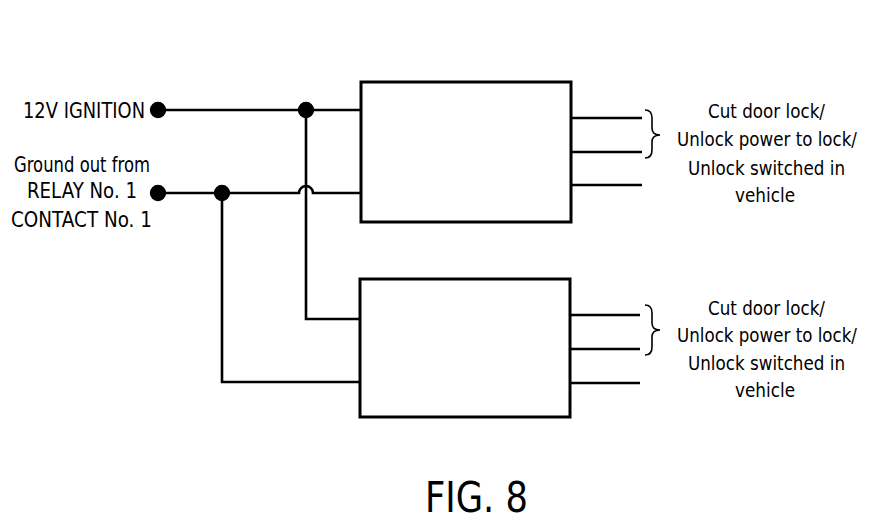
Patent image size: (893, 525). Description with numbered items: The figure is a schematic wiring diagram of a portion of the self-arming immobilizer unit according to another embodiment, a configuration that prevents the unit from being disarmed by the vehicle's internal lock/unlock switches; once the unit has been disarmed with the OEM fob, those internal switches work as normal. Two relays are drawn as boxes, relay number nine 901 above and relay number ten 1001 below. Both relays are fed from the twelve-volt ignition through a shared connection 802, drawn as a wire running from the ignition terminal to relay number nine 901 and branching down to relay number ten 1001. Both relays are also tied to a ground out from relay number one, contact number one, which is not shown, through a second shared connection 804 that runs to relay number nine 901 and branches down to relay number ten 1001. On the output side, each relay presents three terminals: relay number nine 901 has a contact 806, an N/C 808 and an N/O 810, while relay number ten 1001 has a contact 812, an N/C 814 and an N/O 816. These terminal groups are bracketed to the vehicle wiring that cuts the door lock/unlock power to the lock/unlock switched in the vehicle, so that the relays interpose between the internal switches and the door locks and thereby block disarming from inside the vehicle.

The shared connection to 12V ignition 802 is at (237, 110).
The shared connection to ground out from relay no. 1, contact no. 1 804 is at (220, 311).
The relay no. 9 901 is at (467, 82).
The relay no. 10 1001 is at (465, 418).
The contact 806 is at (630, 117).
The N/C 808 is at (628, 152).
The N/O 810 is at (626, 190).
The contact 812 is at (627, 313).
The N/C 814 is at (628, 350).
The N/O 816 is at (612, 387).